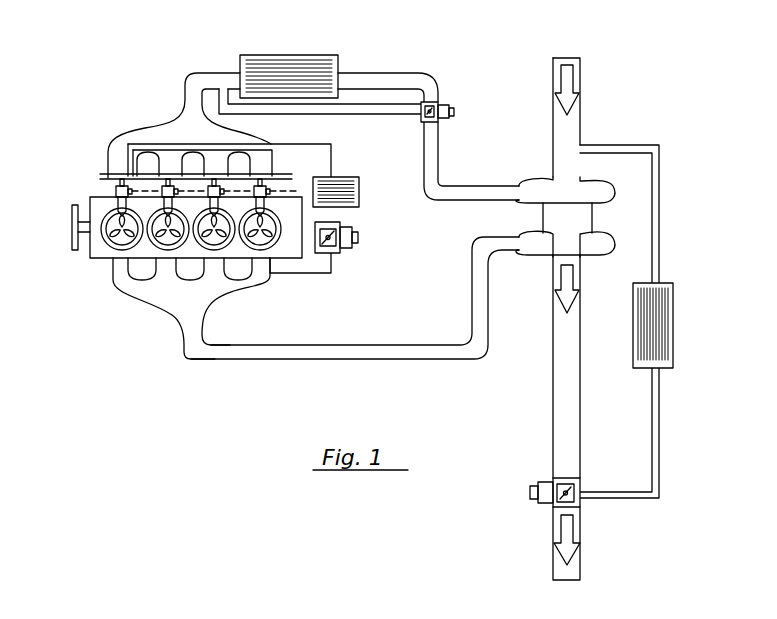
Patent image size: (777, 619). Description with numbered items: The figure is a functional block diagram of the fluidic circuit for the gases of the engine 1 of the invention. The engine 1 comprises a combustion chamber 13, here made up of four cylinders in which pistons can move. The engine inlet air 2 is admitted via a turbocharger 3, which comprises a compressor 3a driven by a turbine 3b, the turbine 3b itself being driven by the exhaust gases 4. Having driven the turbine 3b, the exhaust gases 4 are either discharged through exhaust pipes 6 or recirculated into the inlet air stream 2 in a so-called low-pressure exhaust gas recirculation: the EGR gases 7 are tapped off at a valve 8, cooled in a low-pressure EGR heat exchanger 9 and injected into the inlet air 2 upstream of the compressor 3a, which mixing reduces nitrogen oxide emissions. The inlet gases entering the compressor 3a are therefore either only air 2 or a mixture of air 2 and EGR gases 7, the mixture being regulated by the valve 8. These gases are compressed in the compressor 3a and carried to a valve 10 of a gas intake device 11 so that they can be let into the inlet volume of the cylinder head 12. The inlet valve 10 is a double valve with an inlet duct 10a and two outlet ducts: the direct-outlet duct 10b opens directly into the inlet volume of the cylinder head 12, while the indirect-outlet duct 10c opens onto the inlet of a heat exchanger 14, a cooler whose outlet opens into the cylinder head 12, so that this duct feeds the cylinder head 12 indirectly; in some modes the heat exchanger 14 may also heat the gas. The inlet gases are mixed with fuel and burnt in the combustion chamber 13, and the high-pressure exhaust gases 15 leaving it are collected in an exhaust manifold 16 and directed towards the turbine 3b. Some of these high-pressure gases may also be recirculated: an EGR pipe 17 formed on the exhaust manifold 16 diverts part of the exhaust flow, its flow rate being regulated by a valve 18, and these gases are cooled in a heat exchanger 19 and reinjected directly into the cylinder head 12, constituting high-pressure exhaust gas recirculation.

The engine 1 is at (667, 77).
The inlet air 2 is at (571, 76).
The turbocharger 3 is at (620, 212).
The compressor 3a is at (601, 193).
The turbine 3b is at (601, 245).
The exhaust gases 4 is at (568, 279).
The exhaust pipes 6 is at (569, 532).
The EGR gases 7 is at (656, 412).
The valve 8 is at (546, 513).
The low-pressure EGR heat exchanger 9 is at (661, 312).
The inlet valve 10 is at (438, 122).
The inlet duct 10a is at (424, 134).
The direct-outlet duct 10b is at (420, 117).
The indirect-outlet duct 10c is at (441, 100).
The gas intake device 11 is at (114, 142).
The cylinder head 12 is at (102, 182).
The combustion chamber 13 is at (84, 256).
The heat exchanger 14 is at (266, 67).
The exhaust gases 15 is at (215, 359).
The exhaust manifold 16 is at (128, 308).
The EGR pipe 17 is at (308, 277).
The valve 18 is at (344, 259).
The heat exchanger 19 is at (350, 200).